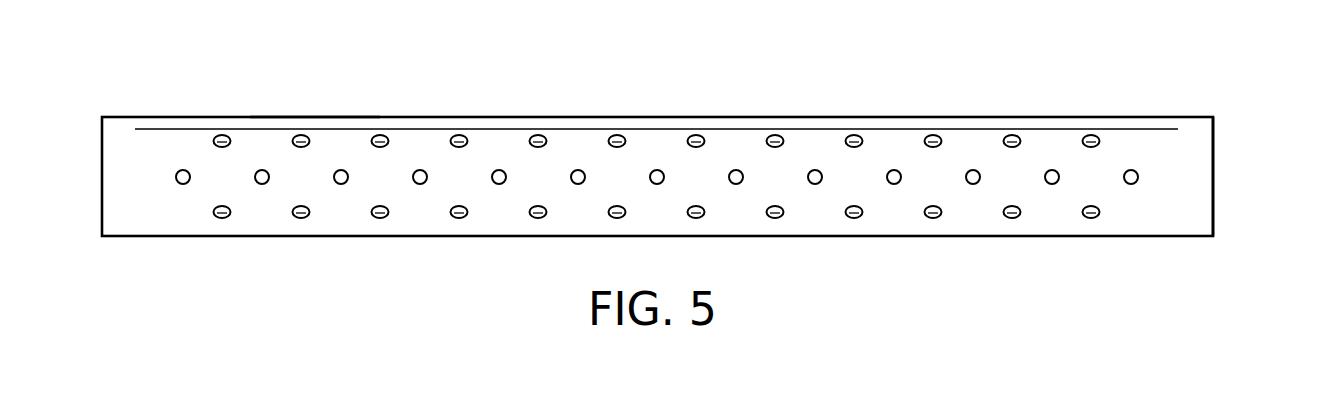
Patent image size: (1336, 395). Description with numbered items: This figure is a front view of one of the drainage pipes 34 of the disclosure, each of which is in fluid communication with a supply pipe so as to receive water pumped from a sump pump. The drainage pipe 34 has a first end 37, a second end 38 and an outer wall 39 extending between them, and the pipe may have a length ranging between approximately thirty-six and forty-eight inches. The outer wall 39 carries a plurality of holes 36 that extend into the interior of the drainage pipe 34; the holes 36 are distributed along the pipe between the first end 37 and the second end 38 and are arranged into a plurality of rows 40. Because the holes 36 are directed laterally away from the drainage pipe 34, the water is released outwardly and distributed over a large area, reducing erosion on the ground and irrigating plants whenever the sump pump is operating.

The drainage pipe 34 is at (313, 117).
The holes 36 is at (382, 137).
The first end 37 is at (102, 173).
The second end 38 is at (1213, 132).
The outer wall 39 is at (957, 138).
The rows 40 is at (1130, 144).